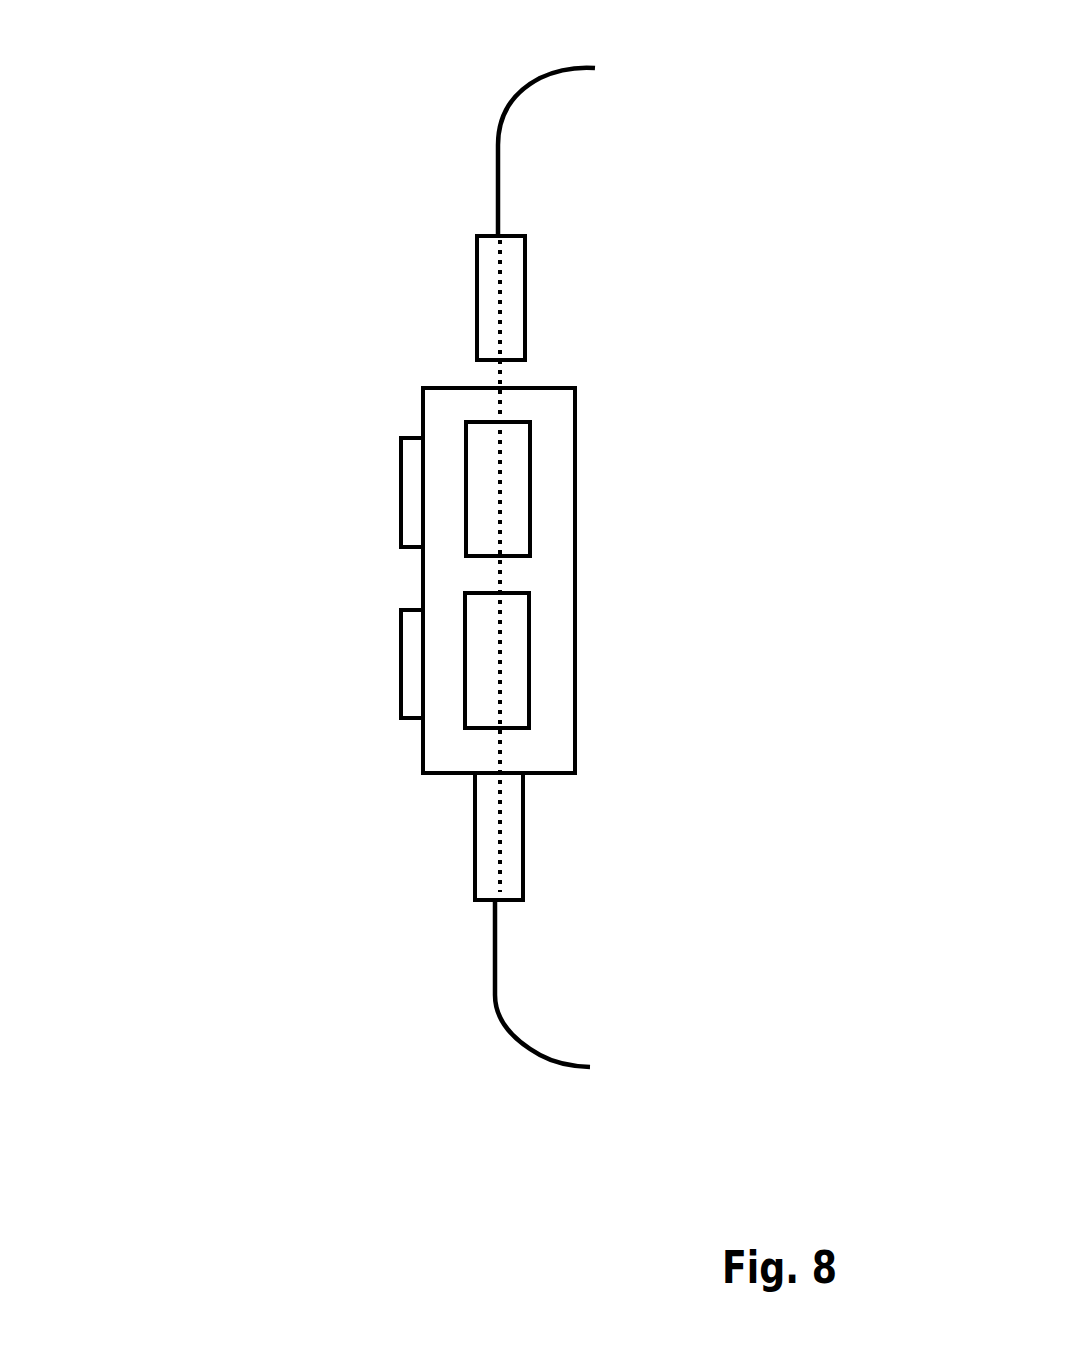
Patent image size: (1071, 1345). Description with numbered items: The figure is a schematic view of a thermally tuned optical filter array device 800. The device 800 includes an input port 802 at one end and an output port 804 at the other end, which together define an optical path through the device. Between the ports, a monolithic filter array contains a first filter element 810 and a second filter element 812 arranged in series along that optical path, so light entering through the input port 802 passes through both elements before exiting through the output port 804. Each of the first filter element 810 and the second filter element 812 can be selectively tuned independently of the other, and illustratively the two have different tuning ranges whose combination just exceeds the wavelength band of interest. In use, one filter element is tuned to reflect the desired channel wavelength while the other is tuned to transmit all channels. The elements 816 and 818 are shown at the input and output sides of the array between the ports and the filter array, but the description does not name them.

The device 800 is at (160, 138).
The input port 802 is at (497, 235).
The output port 804 is at (493, 900).
The first filter element 810 is at (530, 463).
The second filter element 812 is at (575, 530).
The first ferrule 816 is at (477, 300).
The second ferrule 818 is at (474, 830).